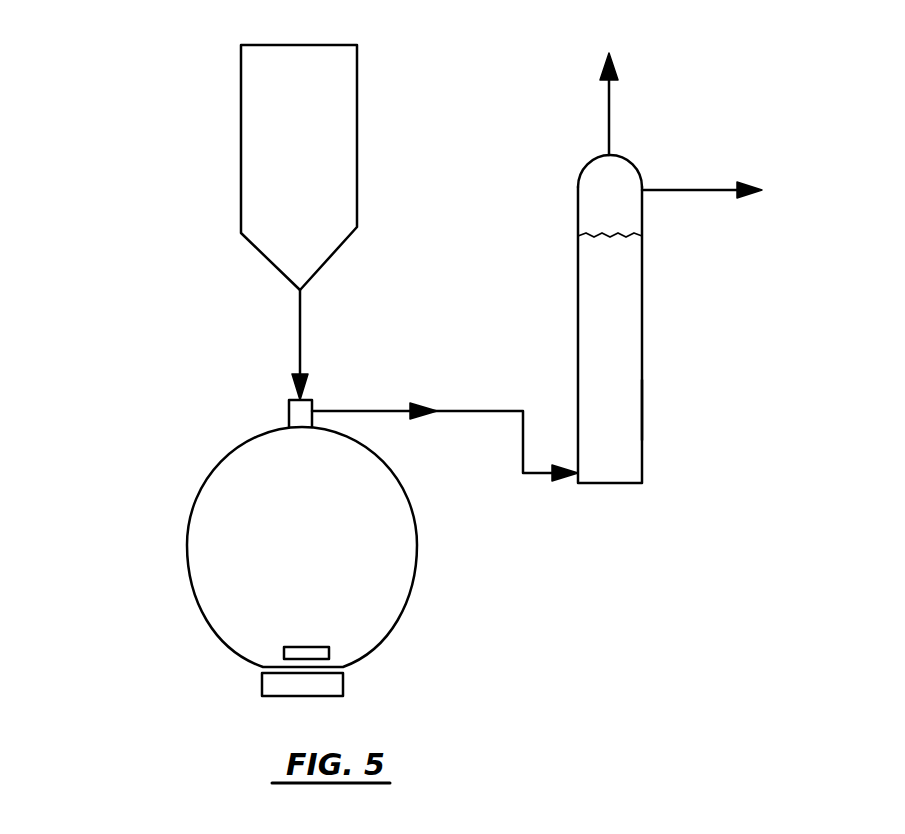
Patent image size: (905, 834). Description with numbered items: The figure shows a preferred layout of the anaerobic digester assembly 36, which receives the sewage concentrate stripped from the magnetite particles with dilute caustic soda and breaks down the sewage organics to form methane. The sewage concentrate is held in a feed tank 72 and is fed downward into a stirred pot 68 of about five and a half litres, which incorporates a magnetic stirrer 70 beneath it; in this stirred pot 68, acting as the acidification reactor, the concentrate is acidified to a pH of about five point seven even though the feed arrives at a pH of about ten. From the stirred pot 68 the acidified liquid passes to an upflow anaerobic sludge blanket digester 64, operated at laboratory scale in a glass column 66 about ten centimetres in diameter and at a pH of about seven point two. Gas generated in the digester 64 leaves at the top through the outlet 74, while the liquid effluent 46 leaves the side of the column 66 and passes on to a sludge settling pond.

The anaerobic digester assembly 36 is at (188, 290).
The feed tank 72 is at (240, 103).
The stirred pot 68 is at (205, 480).
The magnetic stirrer 70 is at (329, 652).
The upflow anaerobic sludge blanket digester 64 is at (578, 312).
The glass column 66 is at (642, 410).
The overhead outlet 74 is at (609, 102).
The effluent 46 is at (661, 187).